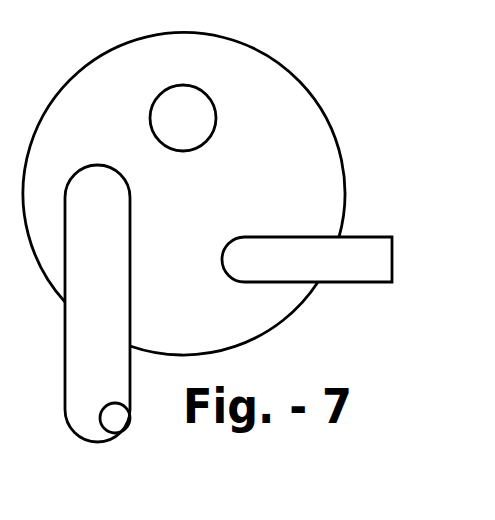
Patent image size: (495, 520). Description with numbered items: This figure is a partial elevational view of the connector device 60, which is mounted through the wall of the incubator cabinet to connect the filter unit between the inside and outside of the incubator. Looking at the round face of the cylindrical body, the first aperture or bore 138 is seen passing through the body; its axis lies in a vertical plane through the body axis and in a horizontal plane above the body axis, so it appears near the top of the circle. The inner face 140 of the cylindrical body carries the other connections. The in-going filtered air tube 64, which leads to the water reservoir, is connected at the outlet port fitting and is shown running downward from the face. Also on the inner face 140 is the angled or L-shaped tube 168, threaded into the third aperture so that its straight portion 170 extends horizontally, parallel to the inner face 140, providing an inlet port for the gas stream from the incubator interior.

The connector device 60 is at (123, 45).
The in-going filtered air tube 64 is at (93, 342).
The first aperture or bore 138 is at (187, 103).
The inner face 140 is at (283, 105).
The angled or L-shaped tube 168 is at (240, 237).
The straight portion 170 is at (322, 263).